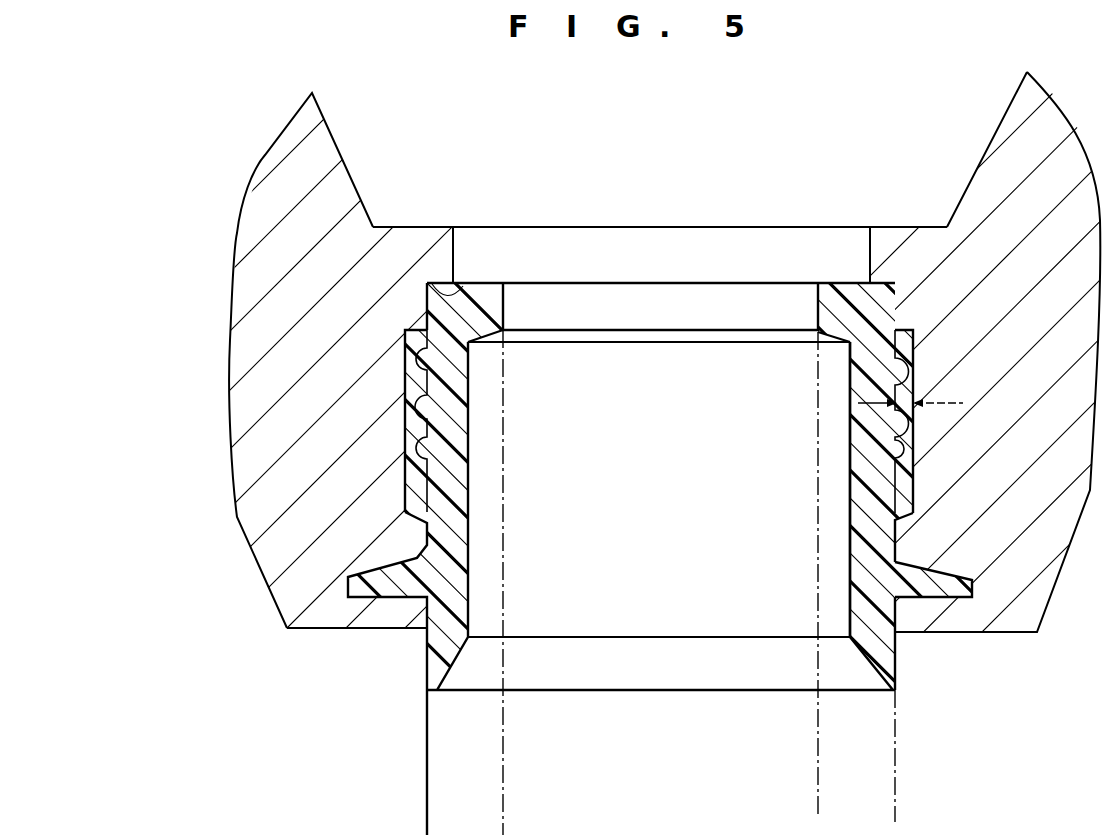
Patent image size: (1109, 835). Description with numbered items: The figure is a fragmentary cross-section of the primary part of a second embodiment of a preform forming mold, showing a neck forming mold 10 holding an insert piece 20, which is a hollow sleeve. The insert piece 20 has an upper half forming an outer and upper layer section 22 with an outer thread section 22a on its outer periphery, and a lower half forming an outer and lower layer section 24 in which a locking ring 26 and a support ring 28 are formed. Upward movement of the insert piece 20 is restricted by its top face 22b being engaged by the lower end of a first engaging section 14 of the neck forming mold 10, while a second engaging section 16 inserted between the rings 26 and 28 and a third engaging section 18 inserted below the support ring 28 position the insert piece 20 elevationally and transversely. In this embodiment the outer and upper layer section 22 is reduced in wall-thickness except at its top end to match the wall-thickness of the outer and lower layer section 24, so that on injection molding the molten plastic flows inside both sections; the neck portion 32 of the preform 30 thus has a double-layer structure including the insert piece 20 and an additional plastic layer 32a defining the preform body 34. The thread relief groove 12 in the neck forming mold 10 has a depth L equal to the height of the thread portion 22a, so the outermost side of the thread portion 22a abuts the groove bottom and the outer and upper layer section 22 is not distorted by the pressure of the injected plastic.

The neck forming mold 10 is at (428, 224).
The thread relief groove 12 is at (412, 437).
The first engaging section 14 is at (893, 240).
The second engaging section 16 is at (915, 508).
The third engaging section 18 is at (915, 620).
The insert piece 20 is at (554, 417).
The outer and upper layer section 22 is at (566, 339).
The outer thread section 22a is at (407, 350).
The top face 22b is at (478, 290).
The outer and lower layer section 24 is at (524, 459).
The locking ring 26 is at (905, 487).
The support ring 28 is at (957, 590).
The preform 30 is at (878, 795).
The neck portion 32 is at (830, 465).
The additional plastic layer 32a is at (830, 547).
The preform body 34 is at (830, 720).
The depth of thread relief groove L is at (910, 387).